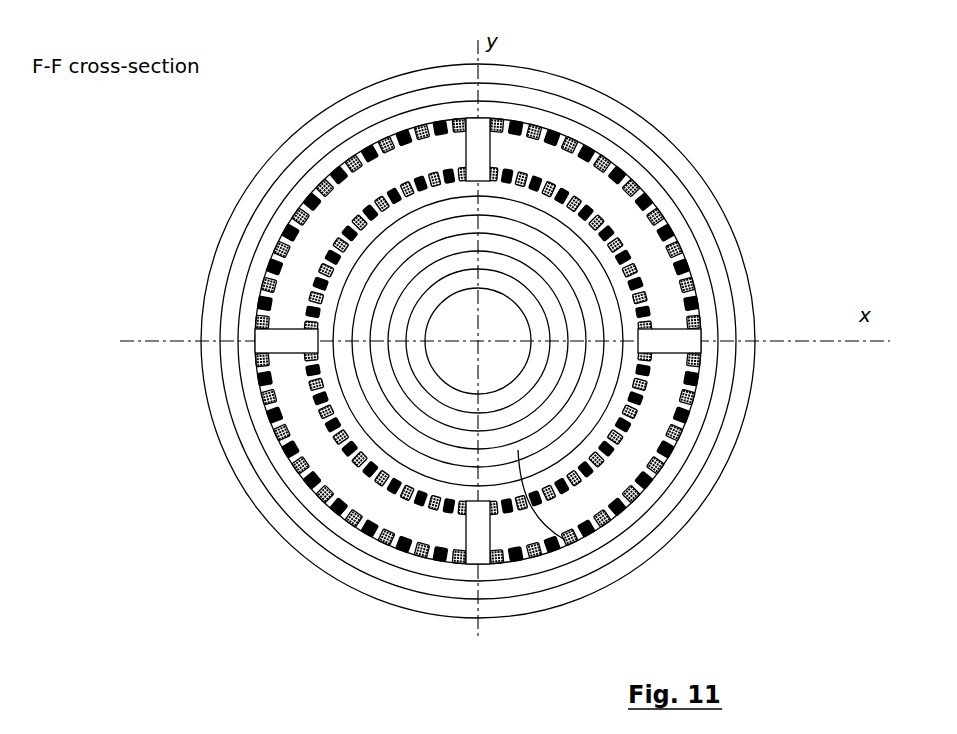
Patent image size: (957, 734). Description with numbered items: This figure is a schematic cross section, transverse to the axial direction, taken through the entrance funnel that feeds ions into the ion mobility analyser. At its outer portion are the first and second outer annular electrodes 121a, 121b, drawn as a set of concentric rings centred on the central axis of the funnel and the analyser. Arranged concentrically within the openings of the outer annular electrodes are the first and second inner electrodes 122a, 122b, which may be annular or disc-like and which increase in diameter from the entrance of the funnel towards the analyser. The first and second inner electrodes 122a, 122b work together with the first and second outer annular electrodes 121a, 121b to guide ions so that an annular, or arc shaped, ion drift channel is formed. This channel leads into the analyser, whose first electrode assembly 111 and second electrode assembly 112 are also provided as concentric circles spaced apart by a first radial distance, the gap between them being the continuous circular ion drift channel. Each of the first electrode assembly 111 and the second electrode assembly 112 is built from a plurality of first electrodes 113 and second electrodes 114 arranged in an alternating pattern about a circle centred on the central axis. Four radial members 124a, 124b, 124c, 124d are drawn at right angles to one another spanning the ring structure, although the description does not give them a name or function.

The first electrode assembly 111 is at (612, 548).
The second electrode assembly 112 is at (675, 448).
The first electrodes 113 is at (695, 400).
The second electrodes 114 is at (698, 382).
The first outer annular electrodes 121a is at (687, 172).
The second outer annular electrodes 121b is at (695, 212).
The first inner electrodes 122a is at (443, 358).
The second inner electrodes 122b is at (446, 395).
The support rib 124a is at (258, 348).
The support rib 124b is at (483, 144).
The support rib 124c is at (677, 333).
The support rib 124d is at (492, 548).